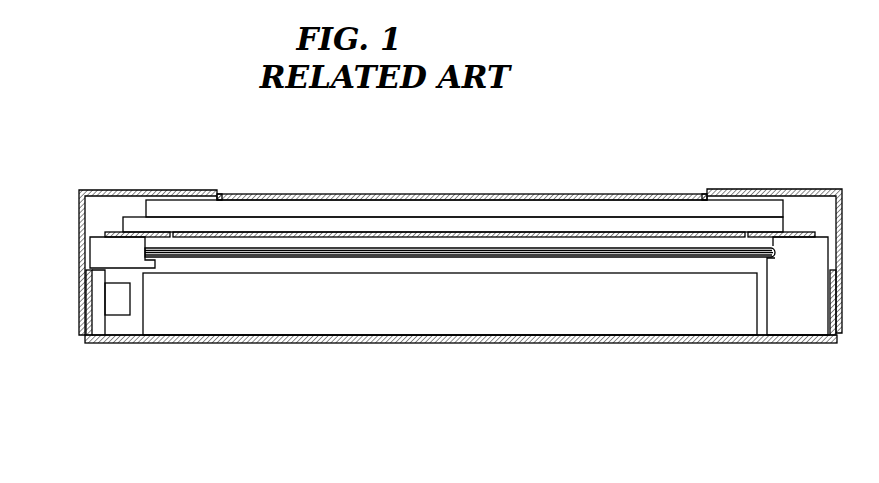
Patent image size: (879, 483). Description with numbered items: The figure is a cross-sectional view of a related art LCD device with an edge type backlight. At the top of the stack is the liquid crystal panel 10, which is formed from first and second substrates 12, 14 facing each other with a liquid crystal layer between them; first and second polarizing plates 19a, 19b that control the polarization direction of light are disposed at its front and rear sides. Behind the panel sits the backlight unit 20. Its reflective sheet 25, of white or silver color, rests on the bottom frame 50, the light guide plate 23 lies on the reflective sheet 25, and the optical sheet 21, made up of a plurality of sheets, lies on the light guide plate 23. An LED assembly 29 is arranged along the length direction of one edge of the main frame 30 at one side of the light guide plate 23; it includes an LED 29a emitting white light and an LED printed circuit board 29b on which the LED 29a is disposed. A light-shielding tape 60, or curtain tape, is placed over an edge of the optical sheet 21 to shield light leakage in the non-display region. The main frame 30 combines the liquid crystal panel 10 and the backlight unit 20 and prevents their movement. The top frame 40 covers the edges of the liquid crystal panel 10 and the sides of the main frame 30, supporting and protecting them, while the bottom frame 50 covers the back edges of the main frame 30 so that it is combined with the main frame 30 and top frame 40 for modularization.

The liquid crystal panel 10 is at (453, 169).
The first substrate 12 is at (505, 224).
The second substrate 14 is at (460, 207).
The first polarizing plate 19a is at (645, 232).
The second polarizing plate 19b is at (612, 194).
The backlight unit 20 is at (445, 353).
The optical sheet 21 is at (198, 260).
The light guide plate 23 is at (165, 317).
The reflective sheet 25 is at (243, 343).
The LED assembly 29 is at (99, 345).
The LED 29a is at (115, 343).
The LED printed circuit board 29b is at (100, 323).
The main frame 30 is at (105, 257).
The top frame 40 is at (135, 190).
The bottom frame 50 is at (372, 343).
The light-shielding tape 60 is at (103, 233).